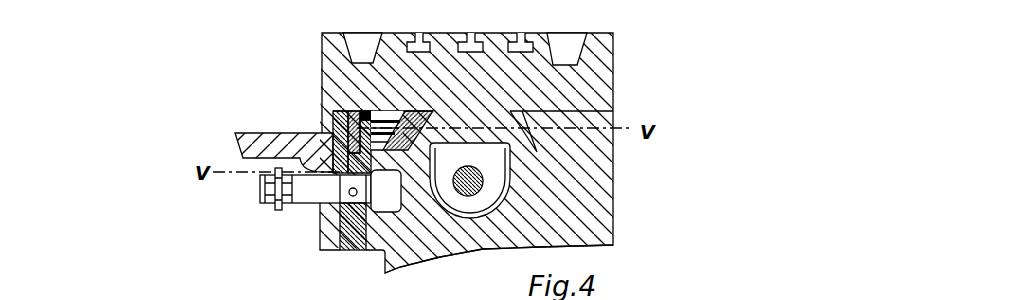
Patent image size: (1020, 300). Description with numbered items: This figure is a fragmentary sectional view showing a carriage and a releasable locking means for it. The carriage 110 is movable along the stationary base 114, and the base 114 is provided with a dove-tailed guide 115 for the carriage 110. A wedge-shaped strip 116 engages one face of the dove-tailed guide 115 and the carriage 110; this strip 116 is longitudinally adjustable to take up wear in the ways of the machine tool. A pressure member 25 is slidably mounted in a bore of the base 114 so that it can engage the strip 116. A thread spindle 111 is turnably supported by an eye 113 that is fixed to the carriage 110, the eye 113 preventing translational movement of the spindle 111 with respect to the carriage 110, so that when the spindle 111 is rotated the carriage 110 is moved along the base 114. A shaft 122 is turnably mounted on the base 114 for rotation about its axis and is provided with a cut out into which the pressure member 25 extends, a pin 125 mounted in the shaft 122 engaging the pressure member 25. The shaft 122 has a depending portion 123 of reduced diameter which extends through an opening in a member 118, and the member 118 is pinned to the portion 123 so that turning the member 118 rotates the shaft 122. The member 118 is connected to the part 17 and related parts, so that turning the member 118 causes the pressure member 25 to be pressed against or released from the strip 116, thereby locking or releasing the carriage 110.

The carriage 110 is at (600, 70).
The stationary base 114 is at (610, 218).
The shaft 122 is at (318, 132).
The wedge-shaped strip 116 is at (350, 109).
The pin 125 is at (325, 111).
The pressure member 25 is at (323, 109).
The dove-tailed guide 115 is at (528, 134).
The member 118 is at (307, 197).
The part 17 is at (267, 189).
The depending portion 123 is at (357, 226).
The eye 113 is at (495, 160).
The thread spindle 111 is at (483, 184).